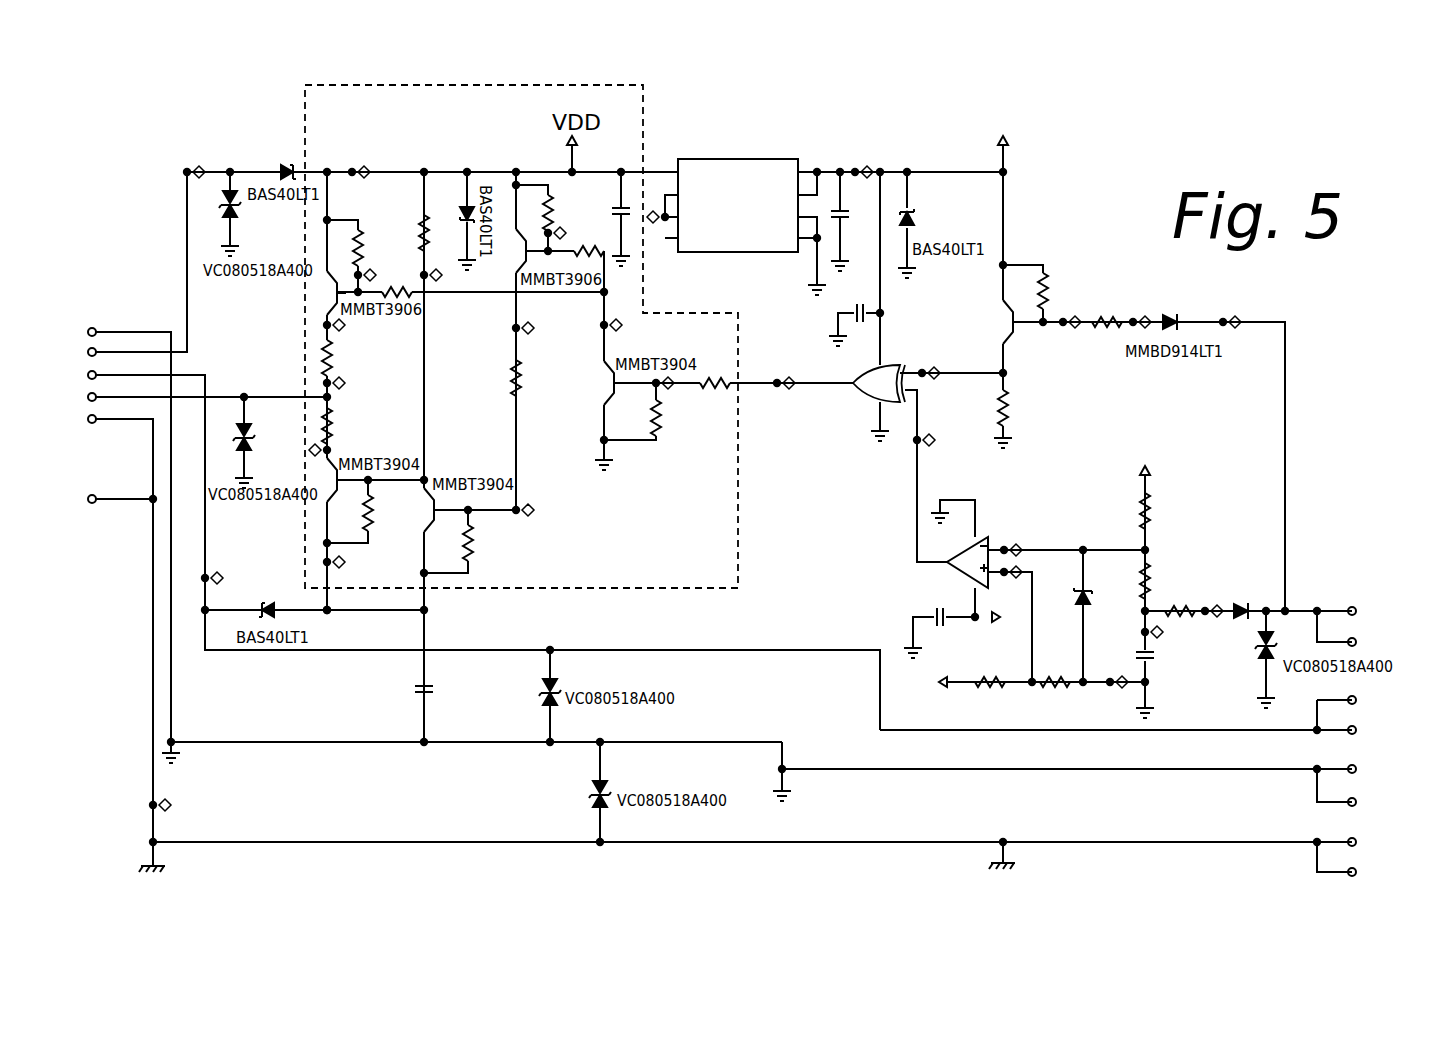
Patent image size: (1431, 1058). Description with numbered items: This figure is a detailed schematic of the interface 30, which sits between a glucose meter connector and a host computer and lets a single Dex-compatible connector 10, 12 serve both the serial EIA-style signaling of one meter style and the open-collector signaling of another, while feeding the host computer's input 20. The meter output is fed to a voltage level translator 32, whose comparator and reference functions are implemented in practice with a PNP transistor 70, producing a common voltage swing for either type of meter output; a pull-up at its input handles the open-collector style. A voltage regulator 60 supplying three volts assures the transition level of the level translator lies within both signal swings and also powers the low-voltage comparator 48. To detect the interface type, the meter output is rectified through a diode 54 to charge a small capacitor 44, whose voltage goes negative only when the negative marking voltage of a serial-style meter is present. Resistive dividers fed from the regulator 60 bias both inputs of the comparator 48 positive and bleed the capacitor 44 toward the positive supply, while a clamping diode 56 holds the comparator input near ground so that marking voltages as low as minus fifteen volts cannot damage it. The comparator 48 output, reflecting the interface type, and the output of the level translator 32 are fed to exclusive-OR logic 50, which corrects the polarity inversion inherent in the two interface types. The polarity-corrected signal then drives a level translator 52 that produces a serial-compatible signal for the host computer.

The connector 10 is at (1378, 700).
The connector 12 is at (1372, 588).
The host computer input 20 is at (120, 284).
The interface 30 is at (505, 860).
The voltage level translator 32 is at (1016, 292).
The capacitor 44 is at (1152, 657).
The comparator 48 is at (982, 538).
The exclusive-OR logic 50 is at (863, 367).
The level translator 52 is at (643, 108).
The diode 54 is at (1242, 618).
The diode 56 is at (1080, 596).
The voltage regulator 60 is at (773, 160).
The PNP transistor 70 is at (1017, 336).